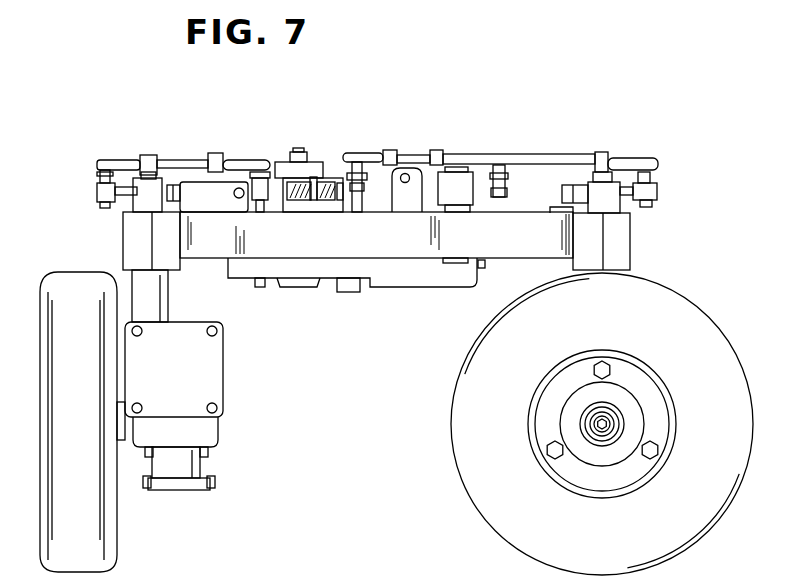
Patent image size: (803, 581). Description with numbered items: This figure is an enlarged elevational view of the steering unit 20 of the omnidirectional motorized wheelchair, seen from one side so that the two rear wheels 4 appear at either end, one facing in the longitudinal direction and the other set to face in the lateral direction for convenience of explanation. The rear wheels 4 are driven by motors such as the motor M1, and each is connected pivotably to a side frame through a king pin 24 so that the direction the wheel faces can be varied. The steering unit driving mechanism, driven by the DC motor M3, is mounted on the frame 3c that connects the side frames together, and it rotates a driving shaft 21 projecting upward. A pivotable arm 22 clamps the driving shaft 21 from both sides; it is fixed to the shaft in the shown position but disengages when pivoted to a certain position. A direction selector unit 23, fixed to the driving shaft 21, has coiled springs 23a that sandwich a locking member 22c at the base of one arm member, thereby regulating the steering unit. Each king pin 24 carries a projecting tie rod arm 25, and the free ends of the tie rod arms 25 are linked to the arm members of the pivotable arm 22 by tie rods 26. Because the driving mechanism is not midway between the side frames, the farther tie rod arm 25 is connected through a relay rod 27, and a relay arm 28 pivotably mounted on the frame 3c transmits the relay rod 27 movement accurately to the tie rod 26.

The steering unit 20 is at (366, 131).
The rear wheel 4 is at (80, 287).
The motor M1 is at (223, 397).
The frame 3c is at (390, 247).
The DC motor M3 is at (428, 280).
The tie rod 26 is at (180, 162).
The king pin 24 is at (138, 202).
The tie rod arm 25 is at (98, 190).
The pivotable arm 22 is at (283, 170).
The driving shaft 21 is at (297, 148).
The direction selector unit 23 is at (288, 208).
The coiled spring 23a is at (305, 203).
The locking member 22c is at (322, 203).
The relay rod 27 is at (413, 157).
The relay arm 28 is at (453, 178).